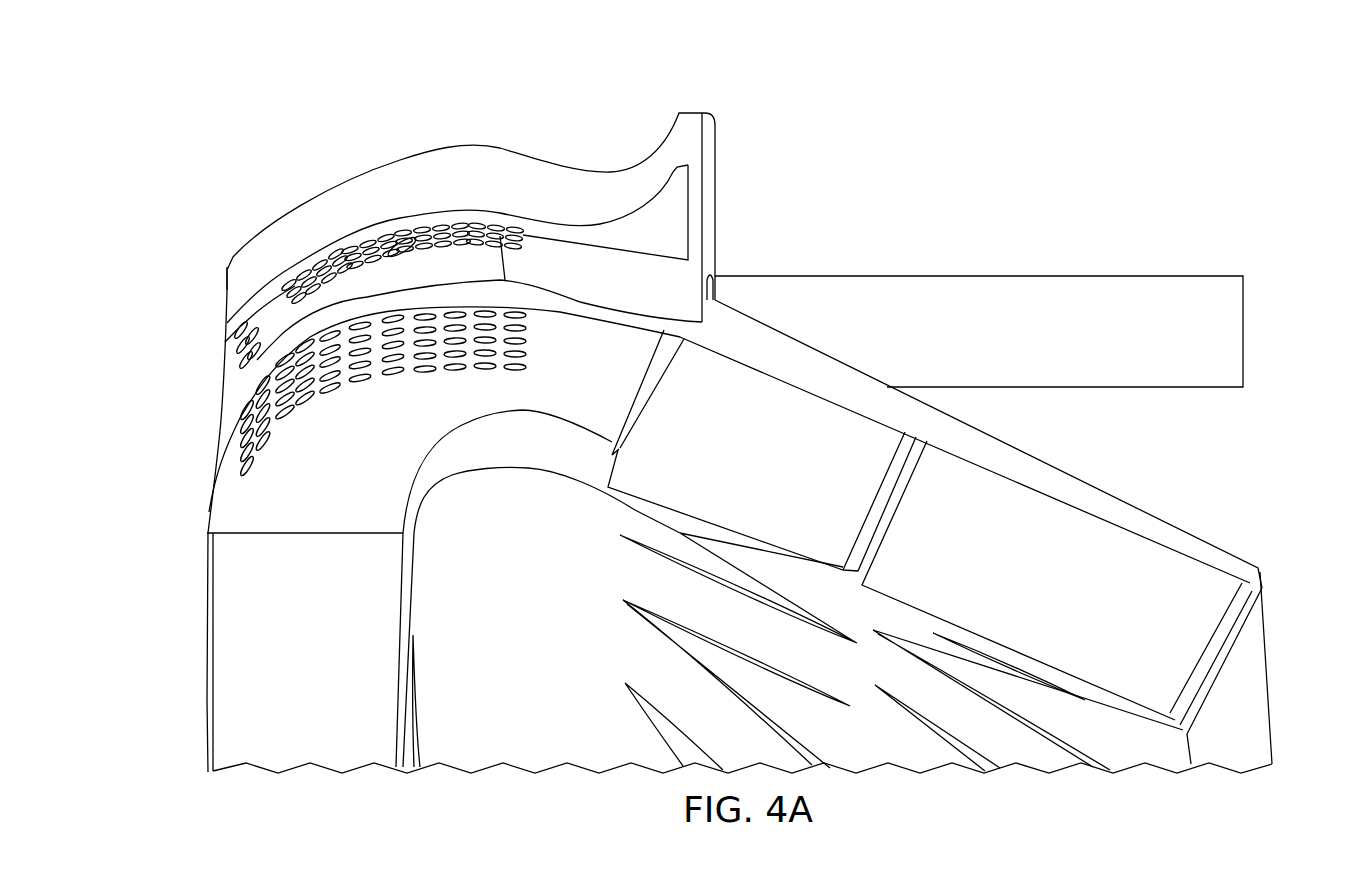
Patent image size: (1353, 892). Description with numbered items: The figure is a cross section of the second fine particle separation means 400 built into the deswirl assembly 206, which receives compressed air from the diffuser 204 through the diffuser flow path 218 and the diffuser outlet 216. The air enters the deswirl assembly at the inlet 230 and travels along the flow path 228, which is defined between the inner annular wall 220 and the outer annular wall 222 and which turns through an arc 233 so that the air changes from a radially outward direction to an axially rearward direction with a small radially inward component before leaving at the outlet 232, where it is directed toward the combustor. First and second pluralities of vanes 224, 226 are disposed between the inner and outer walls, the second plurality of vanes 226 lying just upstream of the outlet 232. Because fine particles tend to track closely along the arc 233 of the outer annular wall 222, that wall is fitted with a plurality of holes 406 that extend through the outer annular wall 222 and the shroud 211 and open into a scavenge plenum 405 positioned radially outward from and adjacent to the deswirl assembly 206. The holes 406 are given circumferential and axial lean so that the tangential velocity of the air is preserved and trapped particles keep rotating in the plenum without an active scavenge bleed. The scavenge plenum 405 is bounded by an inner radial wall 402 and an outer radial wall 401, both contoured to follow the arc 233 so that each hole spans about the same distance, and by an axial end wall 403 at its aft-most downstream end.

The second fine particle separation means 400 is at (219, 117).
The outer radial wall 401 is at (456, 160).
The inner radial wall 402 is at (496, 236).
The axial end wall 403 is at (698, 212).
The scavenge plenum 405 is at (671, 243).
The holes 406 is at (250, 458).
The arc 233 is at (417, 292).
The deswirl assembly 206 is at (580, 330).
The shroud 211 is at (212, 322).
The outer annular wall 222 is at (257, 360).
The flow path 228 is at (414, 447).
The inlet 230 is at (357, 530).
The inner annular wall 220 is at (478, 474).
The diffuser outlet 216 is at (253, 556).
The diffuser flow path 218 is at (336, 700).
The diffuser 204 is at (200, 679).
The first plurality of vanes 224 is at (781, 470).
The second plurality of vanes 226 is at (1056, 594).
The outlet 232 is at (1220, 665).